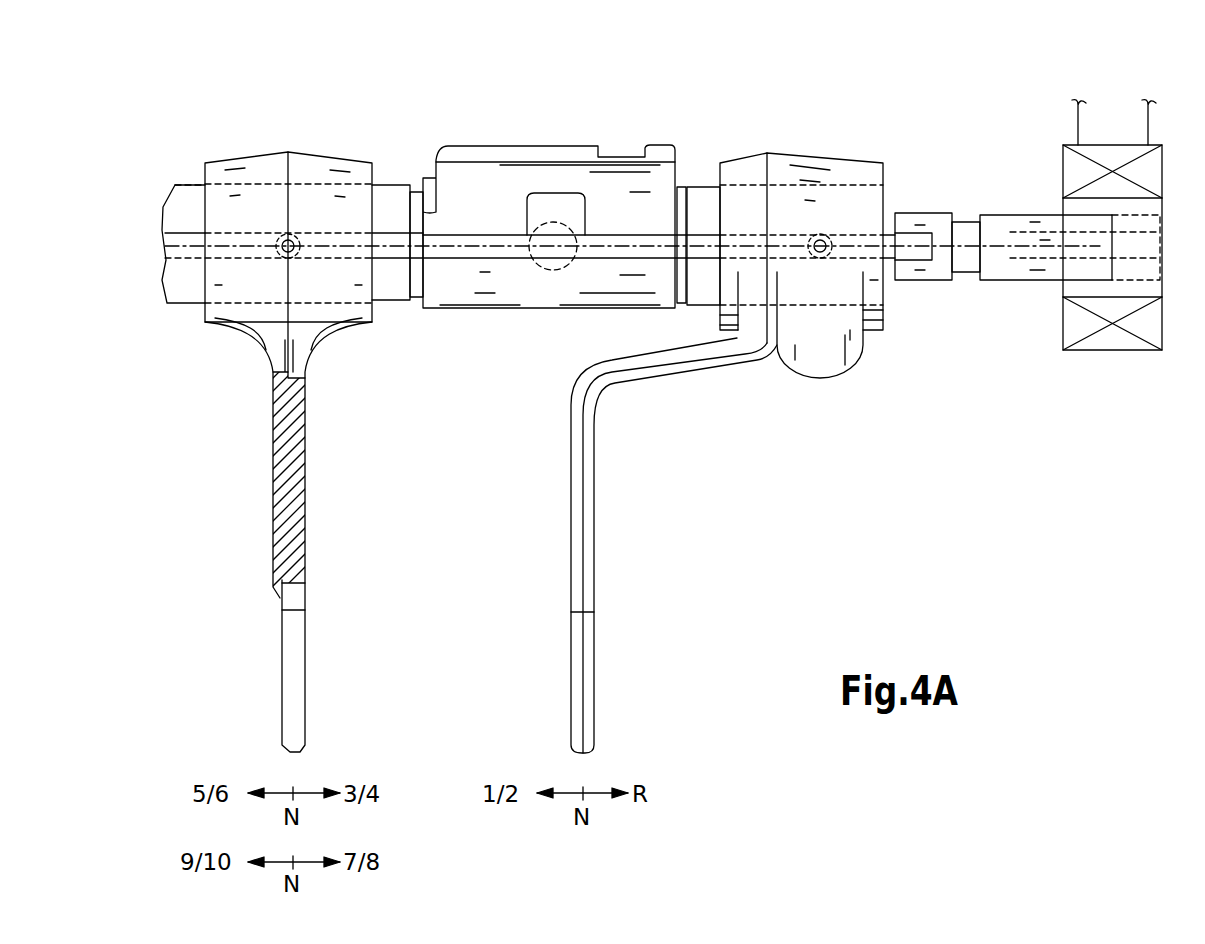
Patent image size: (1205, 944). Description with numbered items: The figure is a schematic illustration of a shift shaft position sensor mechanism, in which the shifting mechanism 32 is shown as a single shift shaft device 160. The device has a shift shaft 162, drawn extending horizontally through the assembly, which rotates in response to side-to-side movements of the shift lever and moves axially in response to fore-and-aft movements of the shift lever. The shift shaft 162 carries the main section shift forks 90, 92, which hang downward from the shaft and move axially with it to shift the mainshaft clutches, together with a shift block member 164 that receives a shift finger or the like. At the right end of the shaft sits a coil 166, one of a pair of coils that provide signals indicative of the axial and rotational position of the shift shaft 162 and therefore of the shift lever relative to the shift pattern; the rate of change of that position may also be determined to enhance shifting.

The shifting mechanism 32 is at (407, 107).
The shift shaft 162 is at (182, 280).
The shift block member 164 is at (543, 147).
The single shift shaft device 160 is at (812, 135).
The coil 166 is at (1118, 358).
The shift fork 92 is at (292, 460).
The shift fork 90 is at (587, 508).